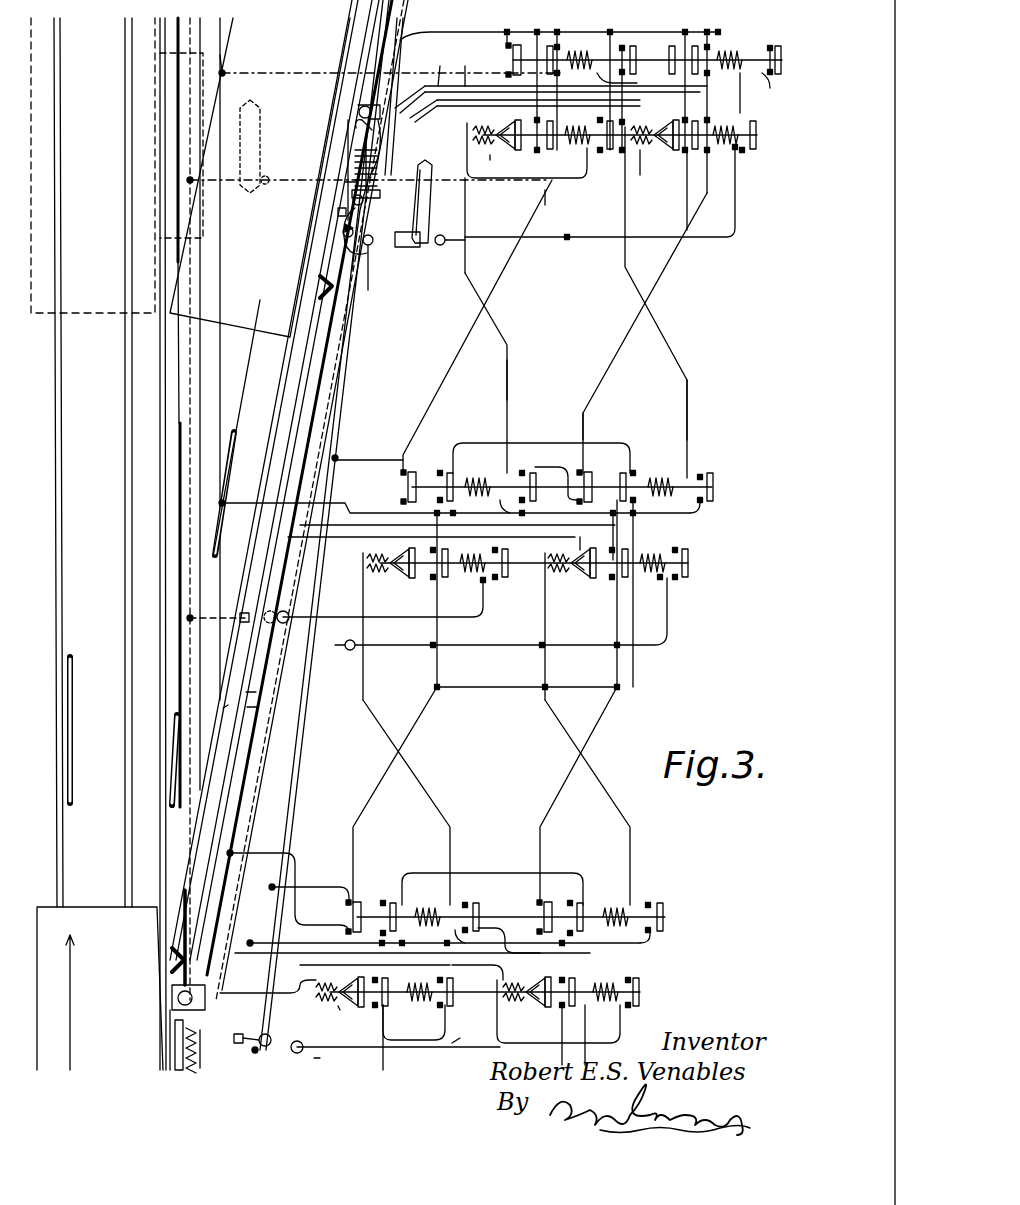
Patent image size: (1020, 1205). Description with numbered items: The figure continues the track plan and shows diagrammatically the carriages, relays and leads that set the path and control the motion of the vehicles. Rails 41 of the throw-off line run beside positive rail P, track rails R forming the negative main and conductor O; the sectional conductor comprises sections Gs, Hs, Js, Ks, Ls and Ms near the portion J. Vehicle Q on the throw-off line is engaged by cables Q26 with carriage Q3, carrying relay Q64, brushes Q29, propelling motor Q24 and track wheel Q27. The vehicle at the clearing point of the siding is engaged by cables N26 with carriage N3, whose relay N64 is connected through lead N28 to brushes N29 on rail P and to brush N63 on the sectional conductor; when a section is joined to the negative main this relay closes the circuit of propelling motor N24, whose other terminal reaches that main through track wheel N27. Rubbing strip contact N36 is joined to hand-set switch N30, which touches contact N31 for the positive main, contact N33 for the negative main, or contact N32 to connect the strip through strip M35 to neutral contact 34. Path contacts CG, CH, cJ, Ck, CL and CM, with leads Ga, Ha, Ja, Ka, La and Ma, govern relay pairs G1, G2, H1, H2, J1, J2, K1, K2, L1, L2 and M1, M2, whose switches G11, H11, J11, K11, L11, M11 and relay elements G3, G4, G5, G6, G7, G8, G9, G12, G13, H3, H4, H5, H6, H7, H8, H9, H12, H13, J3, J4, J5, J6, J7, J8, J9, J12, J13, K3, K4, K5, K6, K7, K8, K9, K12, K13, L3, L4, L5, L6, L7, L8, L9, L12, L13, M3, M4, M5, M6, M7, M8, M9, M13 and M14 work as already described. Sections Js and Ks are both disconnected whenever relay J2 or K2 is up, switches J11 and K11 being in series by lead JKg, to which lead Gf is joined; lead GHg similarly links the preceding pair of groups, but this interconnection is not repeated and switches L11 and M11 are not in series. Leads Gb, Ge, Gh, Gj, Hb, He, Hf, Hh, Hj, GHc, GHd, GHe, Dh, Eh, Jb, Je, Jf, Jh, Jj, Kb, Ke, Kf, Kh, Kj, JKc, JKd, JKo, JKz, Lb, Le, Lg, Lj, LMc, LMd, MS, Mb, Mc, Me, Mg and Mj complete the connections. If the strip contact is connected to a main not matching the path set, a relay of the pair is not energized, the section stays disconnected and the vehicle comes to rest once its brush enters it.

The rails of the throw-off line 41 is at (125, 486).
The plate J is at (170, 307).
The section Js is at (217, 365).
The section Ks is at (352, 363).
The section Hs is at (290, 751).
The neutral contact 34 is at (242, 571).
The contact CL is at (259, 193).
The section Ls is at (220, 60).
The propelling motor N24 is at (350, 108).
The cables N26 is at (348, 130).
The relay N64 is at (352, 152).
The carriage N3 is at (352, 170).
The lead N28 is at (345, 185).
The contact N31 is at (345, 198).
The contact N32 is at (345, 213).
The contact N33 is at (345, 228).
The switch N30 is at (352, 231).
The brushes N29 is at (318, 297).
The track wheel N27 is at (372, 295).
The section Ms is at (400, 162).
The brush N63 is at (365, 275).
The rubbing strip contact N36 is at (424, 218).
The strip M35 is at (411, 251).
The contact CM is at (446, 252).
The lead La is at (427, 143).
The lead LMc is at (529, 115).
The lead LMd is at (595, 51).
The lead MS is at (433, 32).
The lead Me is at (437, 69).
The lead Le is at (465, 69).
The brush L9 is at (508, 60).
The switch L11 is at (552, 81).
The coil L4 is at (579, 51).
The wire L12 is at (617, 78).
The contact L13 is at (627, 91).
The relay L2 is at (659, 60).
The relay plate M9 is at (686, 80).
The switch M11 is at (721, 103).
The coil M4 is at (730, 52).
The relay plate M14 is at (775, 53).
The wire M13 is at (765, 80).
The relay M2 is at (758, 93).
The contact L5 is at (527, 149).
The coil L3 is at (541, 130).
The lead Lb is at (494, 163).
The relay plate L6 is at (534, 146).
The contact L7 is at (574, 143).
The relay plate L8 is at (598, 153).
The relay L1 is at (616, 146).
The lead Mc is at (655, 123).
The wire M5 is at (656, 302).
The contact M6 is at (678, 143).
The lead Mb is at (653, 167).
The relay plate M7 is at (703, 143).
The coil M3 is at (725, 125).
The relay M1 is at (757, 134).
The contact M8 is at (747, 160).
The lead Mj is at (600, 192).
The lead Ma is at (517, 225).
The lead Mg is at (646, 311).
The lead Lj is at (539, 197).
The lead Lg is at (554, 203).
The lead Jf is at (462, 330).
The lead Jh is at (507, 360).
The lead Kf is at (614, 356).
The lead Kh is at (673, 350).
The lead Je is at (367, 476).
The brush J9 is at (404, 492).
The switch J11 is at (439, 487).
The coil J4 is at (477, 479).
The contact J13 is at (523, 482).
The relay J2 is at (539, 487).
The wire J12 is at (505, 505).
The lead JKg is at (541, 449).
The lead Ke is at (557, 472).
The brush K9 is at (578, 487).
The switch K11 is at (622, 479).
The coil K4 is at (660, 478).
The contact K13 is at (706, 479).
The relay K2 is at (718, 487).
The wire K12 is at (687, 505).
The lead JKd is at (466, 516).
The lead JKc is at (451, 541).
The contact J5 is at (389, 624).
The contact J6 is at (411, 574).
The lead Jb is at (423, 598).
The relay plate J7 is at (445, 572).
The coil J3 is at (471, 556).
The contact J8 is at (452, 569).
The relay J1 is at (512, 563).
The lead Kb is at (578, 559).
The contact K5 is at (570, 624).
The contact K6 is at (605, 574).
The relay plate K7 is at (624, 593).
The coil K3 is at (652, 555).
The contact K8 is at (673, 576).
The relay K1 is at (688, 565).
The lead Ja is at (323, 610).
The contact cJ is at (281, 623).
The contact Ck is at (339, 651).
The lead Ka is at (385, 645).
The lead Jj is at (438, 665).
The lead Kj is at (614, 665).
The lead JKo is at (640, 593).
The lead JKz is at (527, 696).
The lead Gf is at (354, 845).
The lead Gh is at (449, 842).
The lead Hf is at (539, 858).
The lead Hh is at (630, 850).
The lead Ge is at (288, 891).
The brush G9 is at (348, 917).
The switch G11 is at (382, 918).
The coil G4 is at (427, 912).
The contact G13 is at (479, 915).
The relay G2 is at (486, 917).
The wire G12 is at (460, 937).
The lead GHg is at (511, 959).
The lead He is at (509, 913).
The brush H9 is at (543, 918).
The switch H11 is at (570, 917).
The coil H4 is at (613, 909).
The contact H13 is at (658, 910).
The relay H2 is at (671, 917).
The wire H12 is at (650, 935).
The lead GHd is at (453, 951).
The lead GHe is at (268, 984).
The contact G5 is at (340, 999).
The lead Gb is at (347, 1001).
The contact G6 is at (366, 1003).
The relay plate G7 is at (392, 1002).
The coil G3 is at (419, 984).
The contact G8 is at (444, 1003).
The relay G1 is at (452, 995).
The lead Ga is at (414, 1022).
The lead GHc is at (479, 973).
The lead Hb is at (558, 999).
The contact H5 is at (525, 994).
The contact H6 is at (552, 1004).
The relay plate H7 is at (574, 1003).
The coil H3 is at (605, 979).
The contact H8 is at (628, 1004).
The relay H1 is at (638, 992).
The lead Ha is at (465, 1034).
The lead Eh is at (495, 1050).
The lead Hj is at (560, 1052).
The lead Gj is at (380, 1055).
The lead Dh is at (326, 1058).
The contact CH is at (287, 1049).
The contact CG is at (259, 1030).
The vehicle Q is at (37, 1010).
The positive rail P is at (183, 888).
The track rails R is at (233, 801).
The rod O is at (247, 705).
The section Gs is at (217, 710).
The brushes Q29 is at (168, 958).
The propelling motor Q24 is at (172, 990).
The track wheel Q27 is at (184, 1009).
The cables Q26 is at (170, 1015).
The carriage Q3 is at (172, 1040).
The relay Q64 is at (183, 1060).